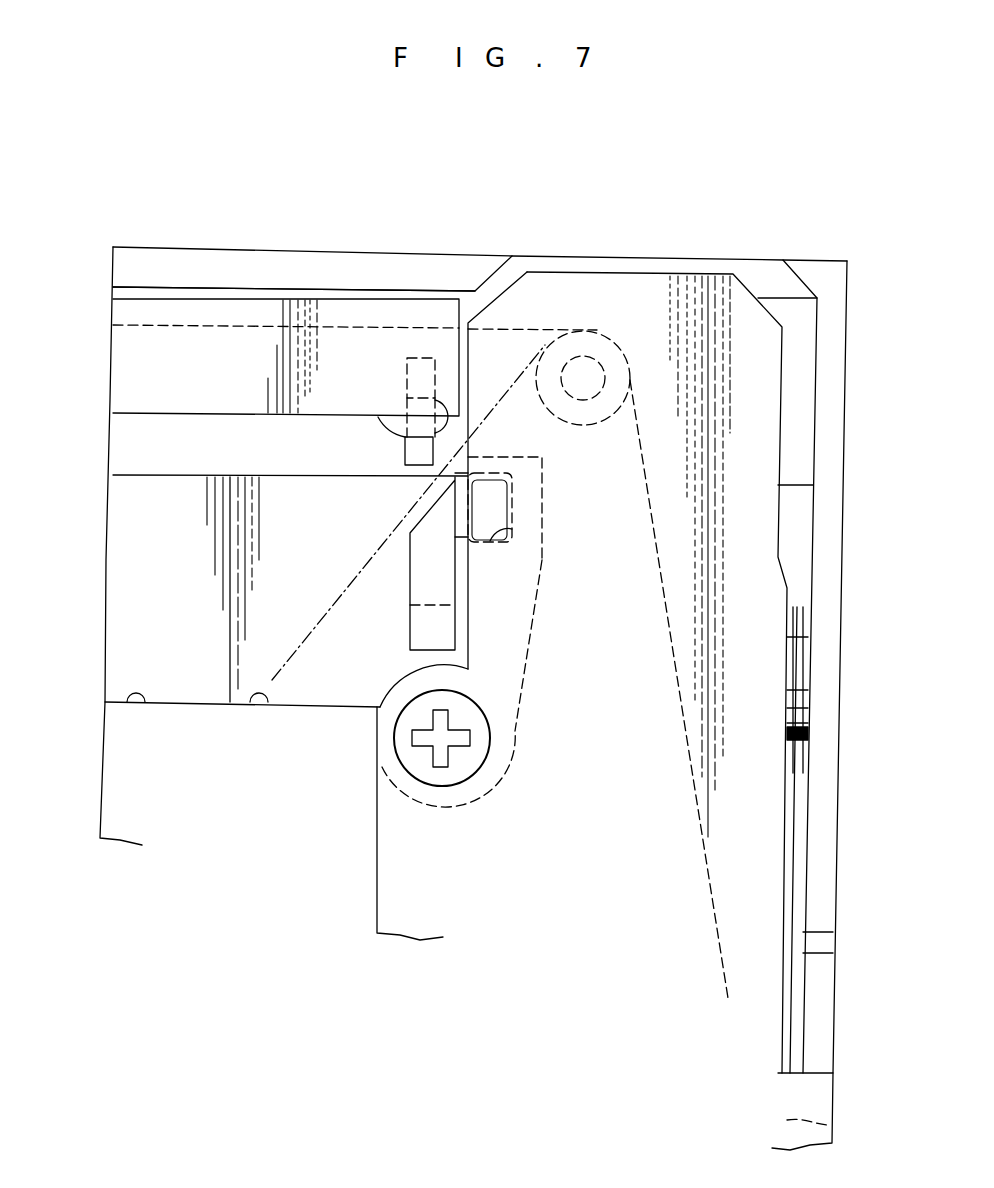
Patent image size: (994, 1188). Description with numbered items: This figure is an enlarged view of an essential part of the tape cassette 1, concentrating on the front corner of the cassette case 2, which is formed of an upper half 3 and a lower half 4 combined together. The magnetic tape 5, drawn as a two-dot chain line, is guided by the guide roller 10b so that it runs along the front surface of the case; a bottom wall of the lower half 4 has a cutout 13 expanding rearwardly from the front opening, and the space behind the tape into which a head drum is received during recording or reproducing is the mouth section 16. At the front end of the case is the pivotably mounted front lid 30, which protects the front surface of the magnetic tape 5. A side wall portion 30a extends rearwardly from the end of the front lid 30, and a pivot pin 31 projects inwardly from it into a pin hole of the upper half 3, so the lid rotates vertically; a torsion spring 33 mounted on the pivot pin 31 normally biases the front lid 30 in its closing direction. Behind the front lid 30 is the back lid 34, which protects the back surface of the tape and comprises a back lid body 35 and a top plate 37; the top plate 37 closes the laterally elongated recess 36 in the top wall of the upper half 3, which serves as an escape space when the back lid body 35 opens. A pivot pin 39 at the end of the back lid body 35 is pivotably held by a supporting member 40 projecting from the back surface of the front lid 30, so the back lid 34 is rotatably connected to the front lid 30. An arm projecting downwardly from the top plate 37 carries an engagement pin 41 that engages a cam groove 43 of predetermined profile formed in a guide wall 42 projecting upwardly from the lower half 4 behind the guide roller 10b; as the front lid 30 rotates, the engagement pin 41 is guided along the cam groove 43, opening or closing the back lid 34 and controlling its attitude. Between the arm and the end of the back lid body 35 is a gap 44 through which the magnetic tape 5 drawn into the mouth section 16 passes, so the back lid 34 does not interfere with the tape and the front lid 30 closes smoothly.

The tape cassette 1 is at (782, 226).
The cassette case 2 is at (833, 1092).
The upper half 3 is at (143, 707).
The lower half 4 is at (830, 1125).
The magnetic tape 5 is at (376, 325).
The guide roller 10b is at (597, 330).
The cutout 13 is at (377, 835).
The mouth section 16 is at (153, 613).
The front lid 30 is at (248, 247).
The side wall portion 30a is at (832, 403).
The pivot pin 31 is at (807, 668).
The torsion spring 33 is at (798, 940).
The back lid 34 is at (167, 293).
The back lid body 35 is at (333, 347).
The recess 36 is at (263, 707).
The top plate 37 is at (200, 487).
The pivot pin 39 is at (444, 428).
The supporting member 40 is at (410, 453).
The engagement pin 41 is at (507, 498).
The guide wall 42 is at (542, 473).
The cam groove 43 is at (512, 529).
The gap 44 is at (420, 483).